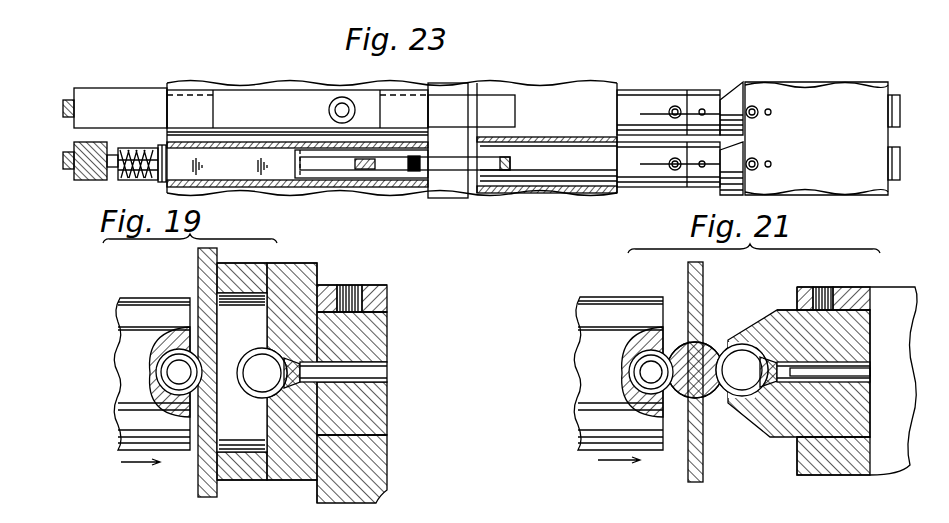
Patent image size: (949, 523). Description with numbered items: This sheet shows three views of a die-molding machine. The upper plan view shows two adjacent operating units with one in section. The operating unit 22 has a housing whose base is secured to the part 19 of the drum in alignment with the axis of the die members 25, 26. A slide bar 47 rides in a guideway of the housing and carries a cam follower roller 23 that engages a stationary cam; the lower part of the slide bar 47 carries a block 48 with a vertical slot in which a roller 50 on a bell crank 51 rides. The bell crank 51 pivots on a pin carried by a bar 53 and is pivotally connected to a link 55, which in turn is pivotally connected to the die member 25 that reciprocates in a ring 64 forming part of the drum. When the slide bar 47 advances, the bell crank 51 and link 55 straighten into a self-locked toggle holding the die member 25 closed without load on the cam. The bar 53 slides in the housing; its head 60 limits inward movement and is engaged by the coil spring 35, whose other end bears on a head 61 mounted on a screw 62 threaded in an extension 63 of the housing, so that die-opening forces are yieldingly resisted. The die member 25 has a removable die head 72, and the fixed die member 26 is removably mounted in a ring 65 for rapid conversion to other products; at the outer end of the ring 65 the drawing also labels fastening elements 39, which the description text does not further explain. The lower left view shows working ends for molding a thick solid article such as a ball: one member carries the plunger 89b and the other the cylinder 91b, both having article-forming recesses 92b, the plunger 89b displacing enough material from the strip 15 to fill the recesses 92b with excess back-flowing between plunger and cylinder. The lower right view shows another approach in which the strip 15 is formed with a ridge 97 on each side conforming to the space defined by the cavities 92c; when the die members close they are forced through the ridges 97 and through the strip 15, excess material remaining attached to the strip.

In FIG. 19, the strip 15 is at (198, 270).
In FIG. 21, the strip 15 is at (688, 468).
In FIG. 23, the part of the drum 19 is at (339, 188).
In FIG. 23, the operating unit 22 is at (255, 82).
In FIG. 23, the cam follower roller 23 is at (342, 97).
In FIG. 23, the die member 25 is at (640, 90).
In FIG. 19, the die member 25 is at (132, 296).
In FIG. 21, the die member 25 is at (608, 296).
In FIG. 23, the die member 26 is at (728, 92).
In FIG. 19, the die member 26 is at (310, 263).
In FIG. 21, the die member 26 is at (782, 306).
In FIG. 23, the coil spring 35 is at (136, 180).
In FIG. 23, the screws 39 is at (900, 110).
In FIG. 23, the slide bar 47 is at (490, 98).
In FIG. 23, the block 48 is at (378, 166).
In FIG. 23, the roller 50 is at (360, 190).
In FIG. 23, the bell crank 51 is at (305, 148).
In FIG. 23, the bar 53 is at (258, 170).
In FIG. 23, the link 55 is at (445, 172).
In FIG. 23, the head 60 is at (162, 146).
In FIG. 23, the head 61 is at (132, 148).
In FIG. 23, the screw 62 is at (64, 118).
In FIG. 23, the extension 63 is at (115, 96).
In FIG. 23, the ring 64 is at (570, 96).
In FIG. 23, the ring 65 is at (810, 100).
In FIG. 23, the die head 72 is at (700, 90).
In FIG. 19, the plunger 89b is at (150, 392).
In FIG. 19, the cylinder 91b is at (252, 482).
In FIG. 19, the article-forming recesses 92b is at (165, 362).
In FIG. 21, the cavities 92c is at (645, 365).
In FIG. 21, the ridge 97 is at (678, 345).